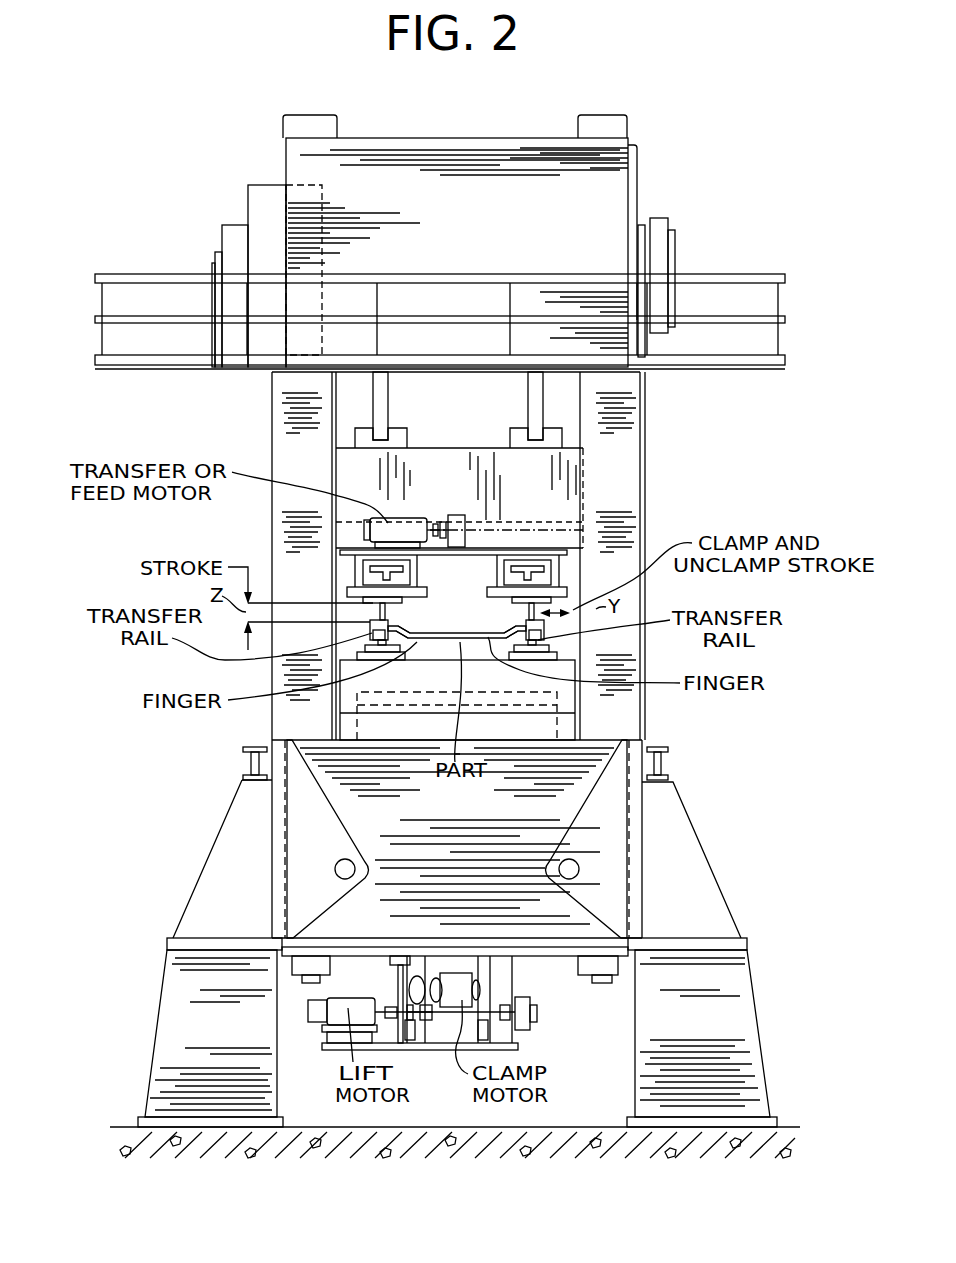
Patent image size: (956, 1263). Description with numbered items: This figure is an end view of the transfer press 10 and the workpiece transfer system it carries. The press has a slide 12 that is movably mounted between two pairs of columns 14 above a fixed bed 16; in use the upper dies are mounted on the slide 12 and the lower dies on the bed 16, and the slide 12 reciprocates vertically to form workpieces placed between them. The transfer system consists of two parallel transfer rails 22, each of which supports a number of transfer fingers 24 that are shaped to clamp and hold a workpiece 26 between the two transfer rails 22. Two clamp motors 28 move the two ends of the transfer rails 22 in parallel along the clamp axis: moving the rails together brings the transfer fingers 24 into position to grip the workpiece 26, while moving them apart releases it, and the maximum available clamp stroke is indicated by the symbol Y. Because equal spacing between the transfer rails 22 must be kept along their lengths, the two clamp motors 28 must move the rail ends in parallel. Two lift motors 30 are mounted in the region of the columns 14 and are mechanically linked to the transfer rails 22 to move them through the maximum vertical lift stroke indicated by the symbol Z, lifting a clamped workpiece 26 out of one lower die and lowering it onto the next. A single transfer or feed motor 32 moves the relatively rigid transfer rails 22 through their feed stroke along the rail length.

The transfer press 10 is at (674, 503).
The slide 12 is at (535, 496).
The columns 14 is at (317, 471).
The bed 16 is at (443, 685).
The transfer rails 22 is at (362, 648).
The transfer fingers 24 is at (418, 638).
The workpiece 26 is at (466, 633).
The clamp motors 28 is at (487, 995).
The lift motors 30 is at (359, 1005).
The transfer or feed motor 32 is at (388, 523).